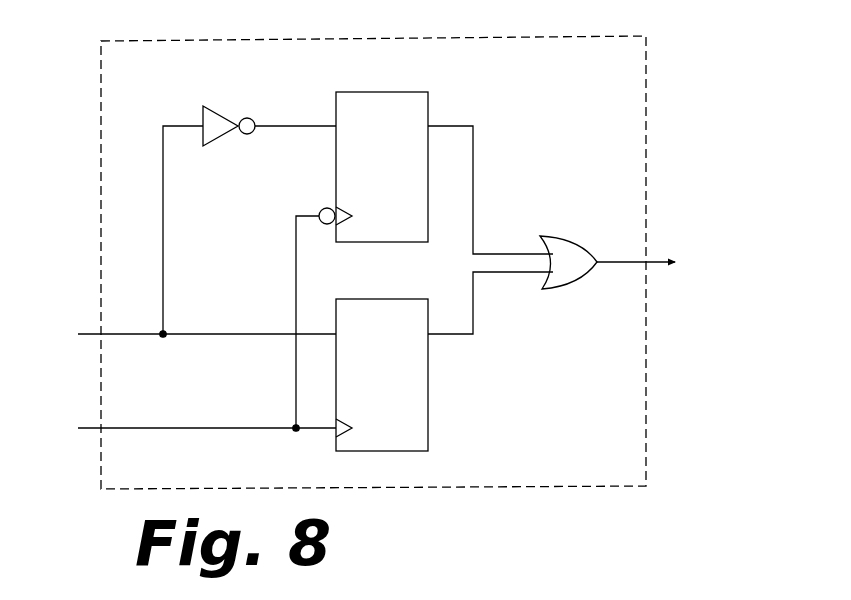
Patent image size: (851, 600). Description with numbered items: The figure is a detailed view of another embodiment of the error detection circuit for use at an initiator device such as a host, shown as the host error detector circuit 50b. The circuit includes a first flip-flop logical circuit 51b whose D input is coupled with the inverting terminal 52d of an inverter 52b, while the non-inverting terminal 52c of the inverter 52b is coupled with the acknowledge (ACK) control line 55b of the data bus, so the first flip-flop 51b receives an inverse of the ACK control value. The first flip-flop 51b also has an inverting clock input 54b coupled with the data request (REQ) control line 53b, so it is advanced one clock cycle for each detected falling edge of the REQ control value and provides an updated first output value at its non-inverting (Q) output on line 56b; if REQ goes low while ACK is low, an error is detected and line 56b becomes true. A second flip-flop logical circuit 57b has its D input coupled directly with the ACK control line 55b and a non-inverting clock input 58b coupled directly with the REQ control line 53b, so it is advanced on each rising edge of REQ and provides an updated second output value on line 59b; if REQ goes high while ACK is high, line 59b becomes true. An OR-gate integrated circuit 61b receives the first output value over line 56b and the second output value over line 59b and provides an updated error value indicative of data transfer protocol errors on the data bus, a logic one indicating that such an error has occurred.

The host error detector circuit 50b is at (650, 79).
The first flip-flop logical circuit 51b is at (389, 106).
The inverter 52b is at (217, 139).
The non-inverting terminal of the inverter 52c is at (181, 123).
The inverting terminal of the inverter 52d is at (270, 124).
The data request (REQ) control line 53b is at (38, 448).
The inverting clock input 54b is at (349, 223).
The acknowledge (ACK) control line 55b is at (52, 318).
The non-inverting (Q) output line of the first flip-flop 56b is at (449, 121).
The second flip-flop logical circuit 57b is at (400, 407).
The non-inverting clock input 58b is at (352, 434).
The non-inverting (Q) output line of the second flip-flop 59b is at (462, 336).
The OR-gate integrated circuit 61b is at (569, 269).